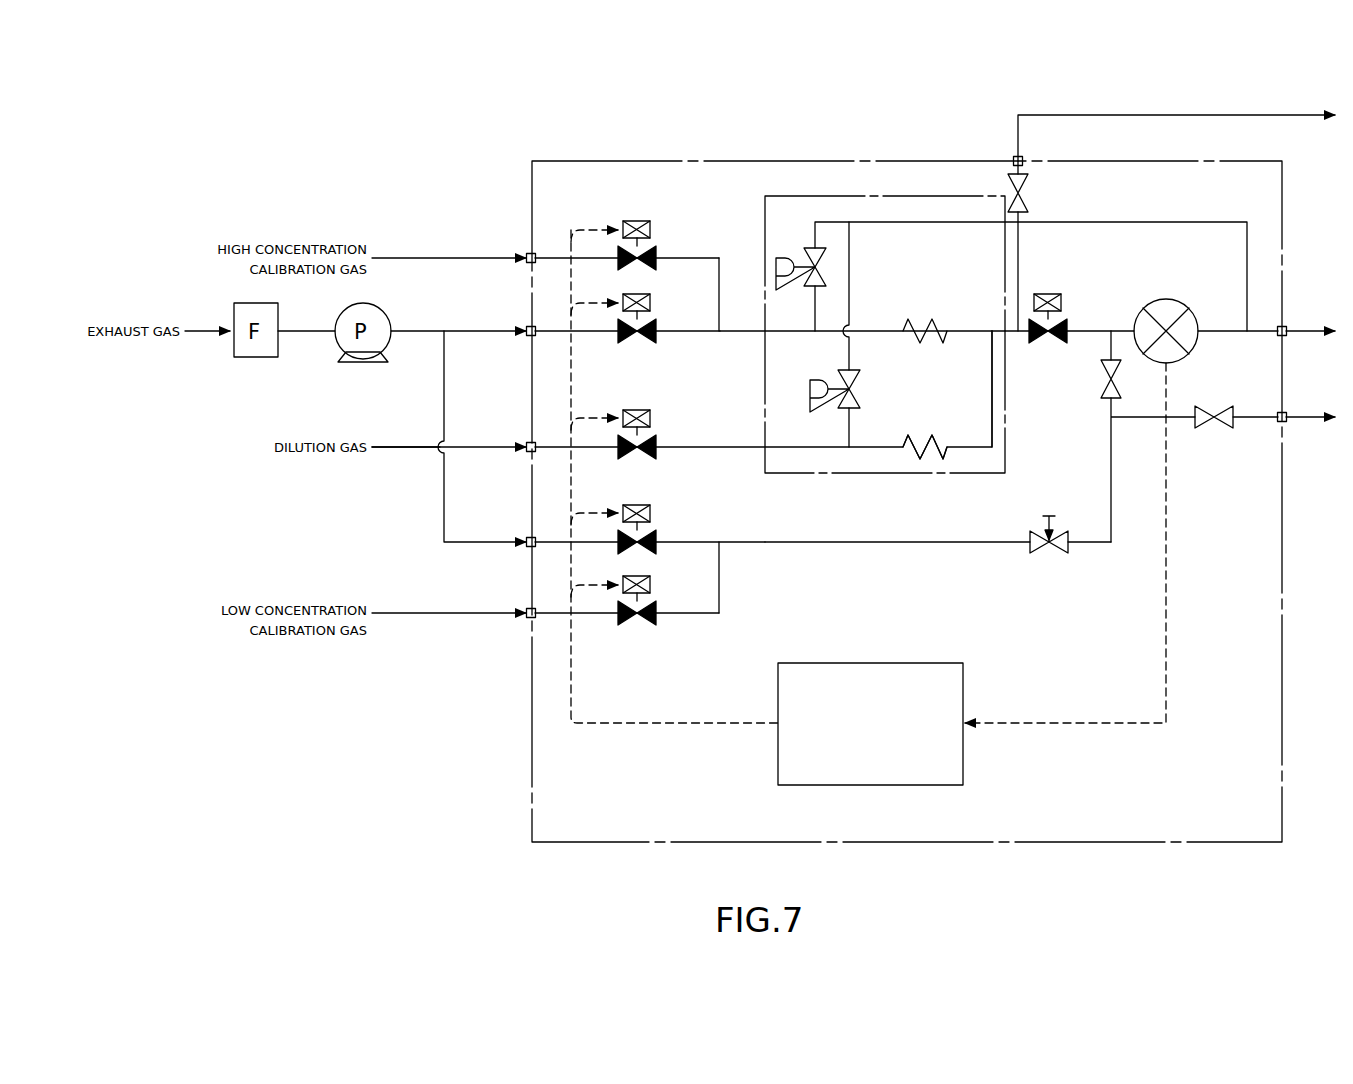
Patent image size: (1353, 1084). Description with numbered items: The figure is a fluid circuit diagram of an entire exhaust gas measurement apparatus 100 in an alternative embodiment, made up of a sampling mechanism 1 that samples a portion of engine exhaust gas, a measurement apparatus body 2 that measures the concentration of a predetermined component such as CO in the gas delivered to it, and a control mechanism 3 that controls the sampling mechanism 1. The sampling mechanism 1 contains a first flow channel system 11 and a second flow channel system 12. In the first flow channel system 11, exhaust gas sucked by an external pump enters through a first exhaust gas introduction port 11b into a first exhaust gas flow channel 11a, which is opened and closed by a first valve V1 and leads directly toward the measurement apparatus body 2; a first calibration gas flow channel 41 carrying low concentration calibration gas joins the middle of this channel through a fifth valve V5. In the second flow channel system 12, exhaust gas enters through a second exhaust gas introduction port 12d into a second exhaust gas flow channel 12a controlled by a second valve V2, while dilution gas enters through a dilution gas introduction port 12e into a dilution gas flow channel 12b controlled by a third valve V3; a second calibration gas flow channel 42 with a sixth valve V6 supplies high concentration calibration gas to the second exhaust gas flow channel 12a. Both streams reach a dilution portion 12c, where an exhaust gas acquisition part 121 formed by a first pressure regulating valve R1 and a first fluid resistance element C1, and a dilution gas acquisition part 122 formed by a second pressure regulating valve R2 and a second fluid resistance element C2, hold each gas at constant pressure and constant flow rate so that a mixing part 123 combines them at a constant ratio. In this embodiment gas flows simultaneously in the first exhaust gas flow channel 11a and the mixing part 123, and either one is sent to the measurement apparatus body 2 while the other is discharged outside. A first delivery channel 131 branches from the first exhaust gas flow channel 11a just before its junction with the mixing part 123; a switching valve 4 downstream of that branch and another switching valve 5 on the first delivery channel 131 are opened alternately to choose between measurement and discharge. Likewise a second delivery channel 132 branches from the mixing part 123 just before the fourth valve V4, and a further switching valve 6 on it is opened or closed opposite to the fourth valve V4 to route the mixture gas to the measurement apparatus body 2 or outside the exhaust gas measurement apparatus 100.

The exhaust gas measurement apparatus 100 is at (968, 150).
The sampling mechanism 1 is at (787, 182).
The measurement apparatus body 2 is at (1196, 348).
The control mechanism 3 is at (860, 663).
The switching valve 4 is at (1120, 378).
The switching valve 5 is at (1208, 430).
The switching valve 6 is at (1030, 188).
The first flow channel system 11 is at (800, 548).
The first exhaust gas flow channel 11a is at (860, 545).
The first exhaust gas introduction port 11b is at (526, 540).
The second flow channel system 12 is at (690, 340).
The second exhaust gas flow channel 12a is at (748, 335).
The dilution gas flow channel 12b is at (719, 452).
The dilution portion 12c is at (1007, 425).
The second exhaust gas introduction port 12d is at (526, 328).
The dilution gas introduction port 12e is at (526, 445).
The first calibration gas flow channel 41 is at (707, 618).
The second calibration gas flow channel 42 is at (721, 258).
The exhaust gas acquisition part 121 is at (958, 255).
The dilution gas acquisition part 122 is at (958, 383).
The mixing part 123 is at (998, 333).
The first delivery channel 131 is at (1127, 418).
The second delivery channel 132 is at (1020, 226).
The first pressure regulating valve R1 is at (820, 262).
The second pressure regulating valve R2 is at (850, 386).
The first fluid resistance element C1 is at (920, 326).
The second fluid resistance element C2 is at (932, 438).
The first valve V1 is at (628, 506).
The second valve V2 is at (650, 303).
The third valve V3 is at (628, 412).
The fourth valve V4 is at (1048, 298).
The fifth valve V5 is at (640, 622).
The sixth valve V6 is at (650, 230).